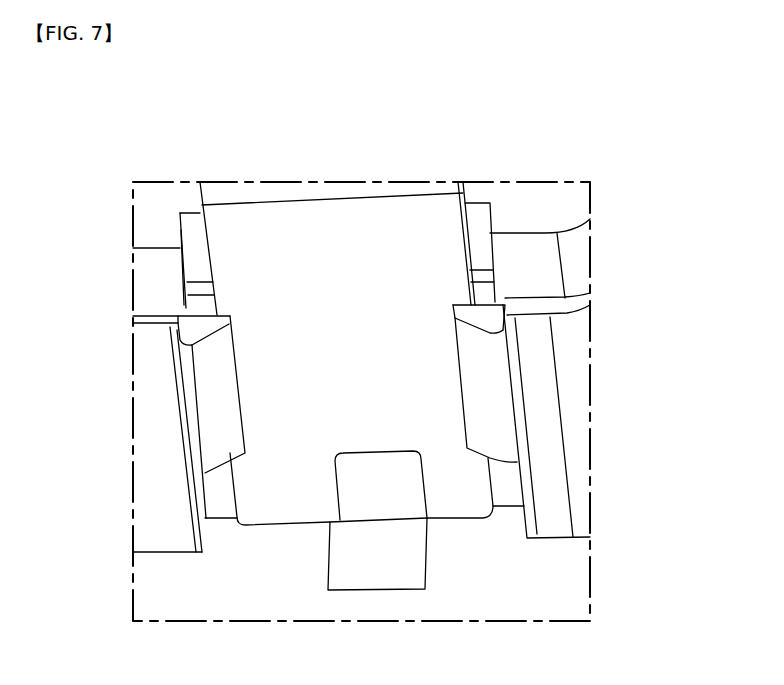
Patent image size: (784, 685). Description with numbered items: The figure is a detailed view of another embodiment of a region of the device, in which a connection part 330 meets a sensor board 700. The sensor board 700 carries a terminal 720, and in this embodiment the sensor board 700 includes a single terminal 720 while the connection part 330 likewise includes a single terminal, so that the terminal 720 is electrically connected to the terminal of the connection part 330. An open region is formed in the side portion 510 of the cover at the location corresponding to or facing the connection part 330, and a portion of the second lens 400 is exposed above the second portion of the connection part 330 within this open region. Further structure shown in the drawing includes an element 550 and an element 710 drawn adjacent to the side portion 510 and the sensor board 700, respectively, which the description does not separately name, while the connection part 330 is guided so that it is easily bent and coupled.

The connection part 330 is at (413, 218).
The second lens 400 is at (572, 202).
The side portion of the cover 510 is at (572, 397).
The clamp block 550 is at (490, 363).
The sensor board 700 is at (457, 600).
The lower connector 710 is at (402, 562).
The terminal 720 is at (348, 505).